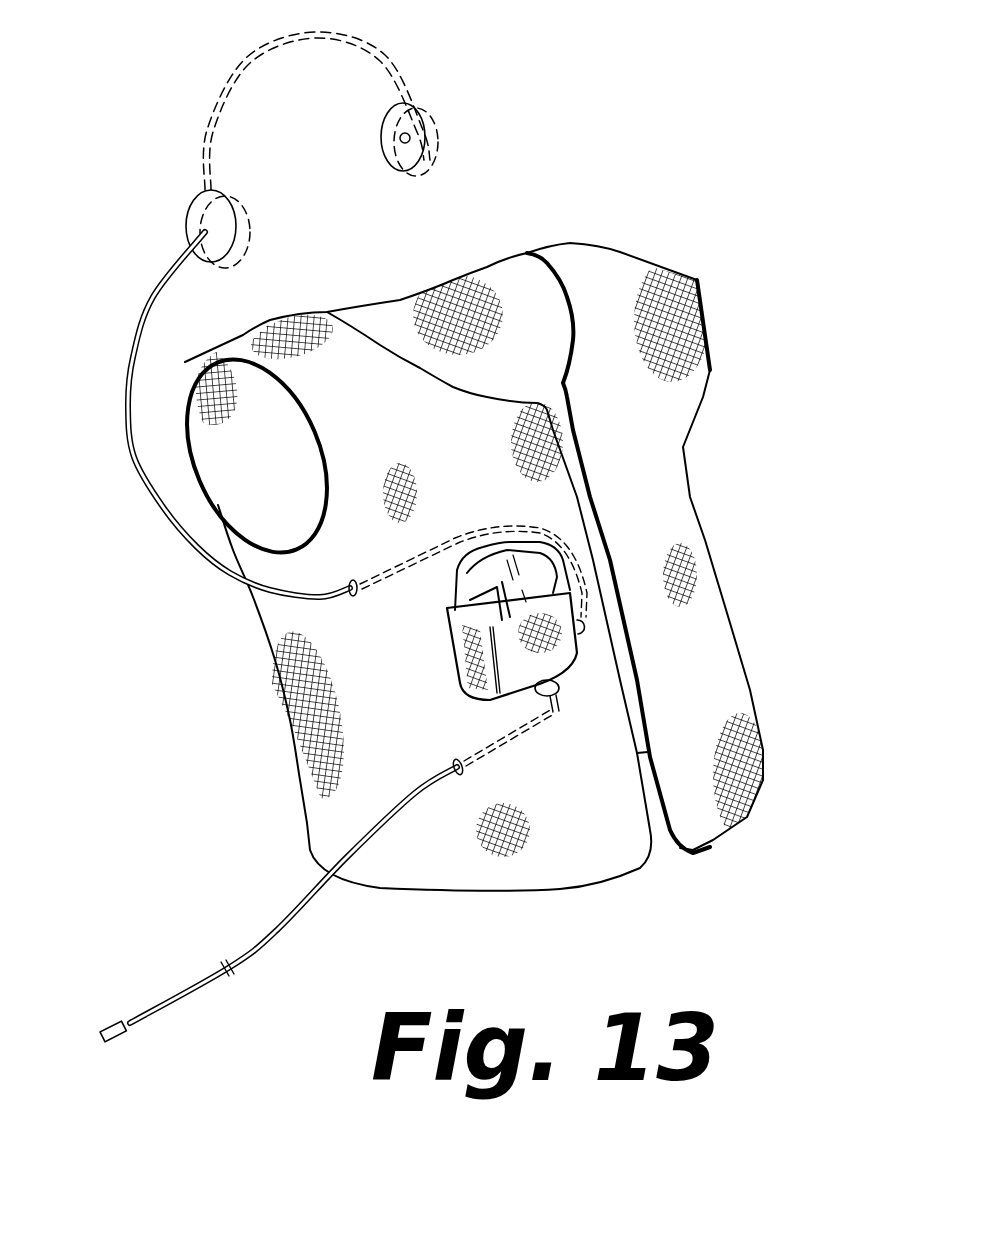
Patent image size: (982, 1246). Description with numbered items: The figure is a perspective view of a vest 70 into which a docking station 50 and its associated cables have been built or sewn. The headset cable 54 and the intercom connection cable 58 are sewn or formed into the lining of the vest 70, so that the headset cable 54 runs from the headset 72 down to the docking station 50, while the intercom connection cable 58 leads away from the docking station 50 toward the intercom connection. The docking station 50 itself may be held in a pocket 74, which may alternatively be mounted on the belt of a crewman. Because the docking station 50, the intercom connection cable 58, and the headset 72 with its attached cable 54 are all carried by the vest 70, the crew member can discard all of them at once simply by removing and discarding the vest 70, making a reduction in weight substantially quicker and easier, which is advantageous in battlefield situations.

The docking station 50 is at (467, 588).
The headset cable 54 is at (150, 307).
The intercom connection cable 58 is at (280, 930).
The vest 70 is at (770, 568).
The headset 72 is at (210, 127).
The pocket 74 is at (482, 698).